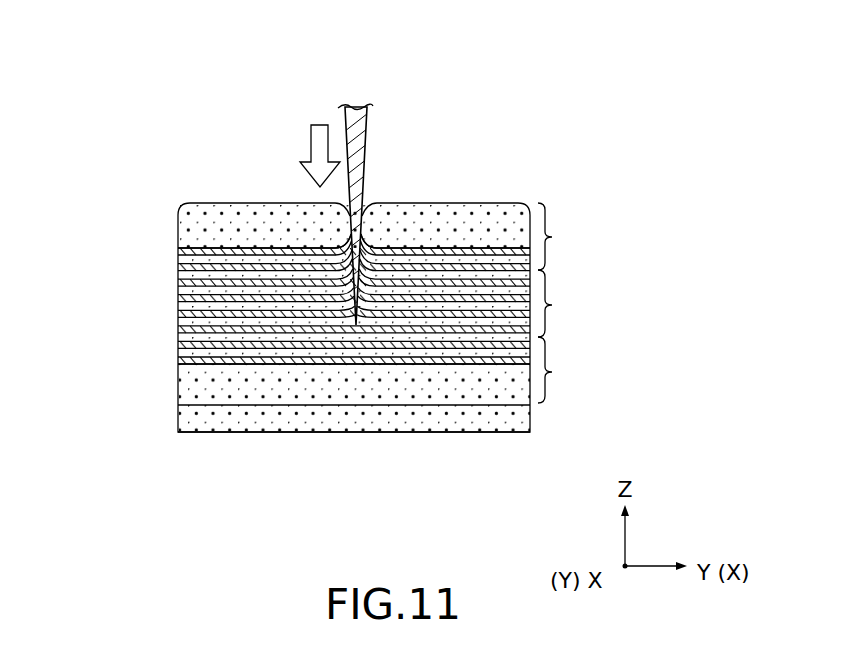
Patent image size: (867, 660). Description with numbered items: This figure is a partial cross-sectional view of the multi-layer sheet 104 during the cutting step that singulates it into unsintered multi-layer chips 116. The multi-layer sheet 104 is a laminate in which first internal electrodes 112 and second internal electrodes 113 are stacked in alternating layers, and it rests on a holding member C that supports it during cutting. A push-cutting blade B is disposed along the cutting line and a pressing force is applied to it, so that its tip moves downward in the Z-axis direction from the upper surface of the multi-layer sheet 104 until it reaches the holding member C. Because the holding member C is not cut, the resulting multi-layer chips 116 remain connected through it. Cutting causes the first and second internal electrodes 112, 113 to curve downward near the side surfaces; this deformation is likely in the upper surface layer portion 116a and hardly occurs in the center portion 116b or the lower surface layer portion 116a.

The multi-layer sheet 104 is at (540, 118).
The multi-layer chips 116 is at (243, 163).
The surface layer portion 116a is at (576, 303).
The center portion 116b is at (576, 303).
The first internal electrodes 112 is at (327, 258).
The second internal electrodes 113 is at (420, 268).
The push-cutting blade B is at (357, 105).
The holding member C is at (460, 414).